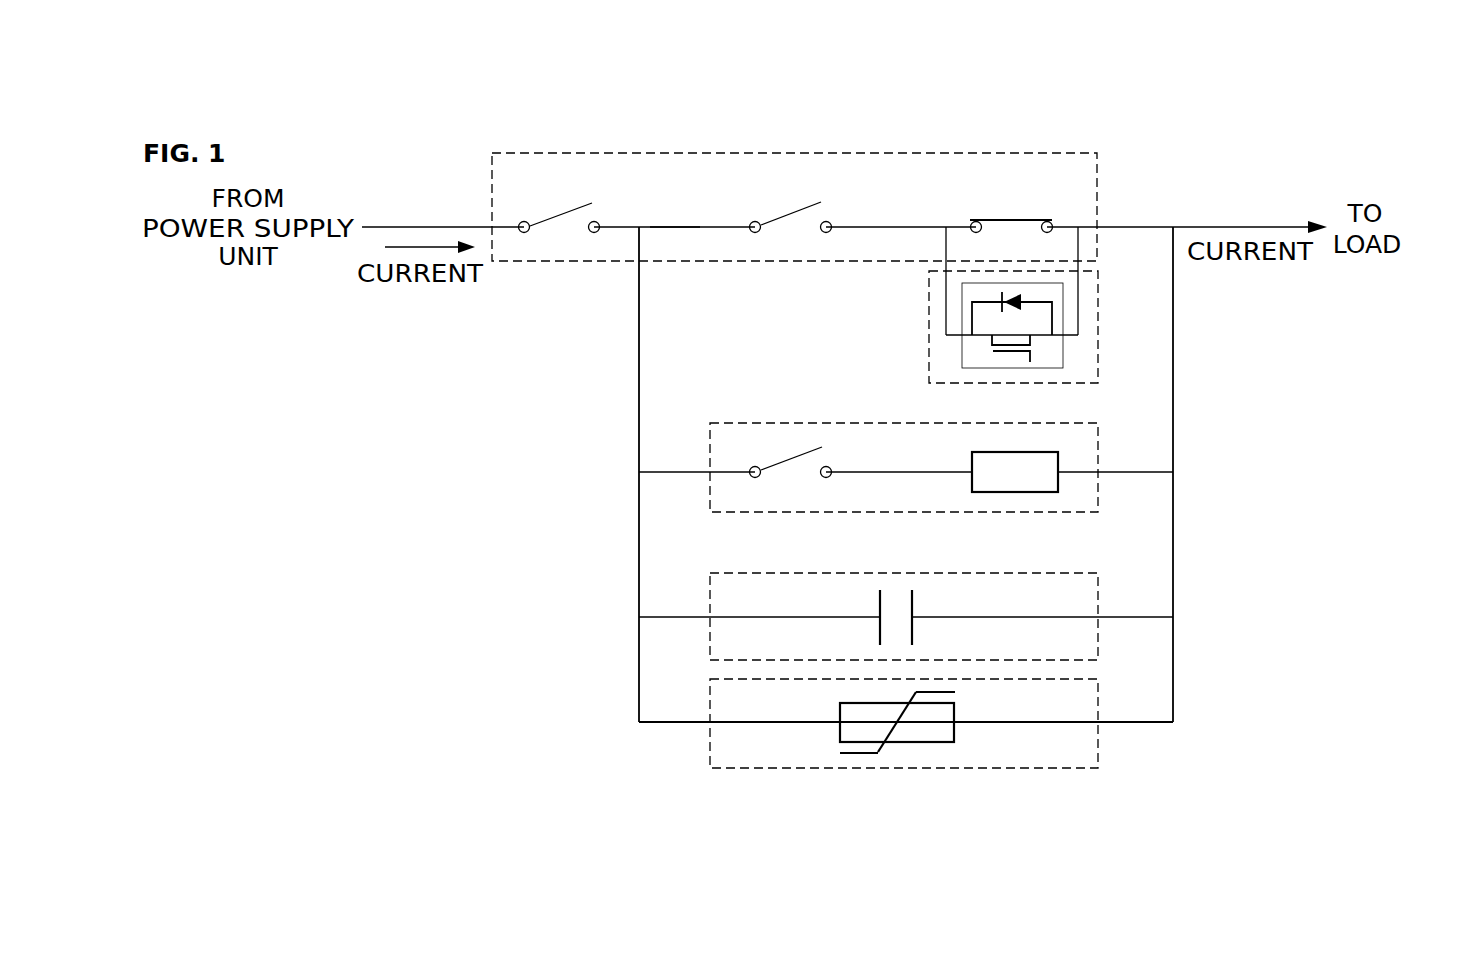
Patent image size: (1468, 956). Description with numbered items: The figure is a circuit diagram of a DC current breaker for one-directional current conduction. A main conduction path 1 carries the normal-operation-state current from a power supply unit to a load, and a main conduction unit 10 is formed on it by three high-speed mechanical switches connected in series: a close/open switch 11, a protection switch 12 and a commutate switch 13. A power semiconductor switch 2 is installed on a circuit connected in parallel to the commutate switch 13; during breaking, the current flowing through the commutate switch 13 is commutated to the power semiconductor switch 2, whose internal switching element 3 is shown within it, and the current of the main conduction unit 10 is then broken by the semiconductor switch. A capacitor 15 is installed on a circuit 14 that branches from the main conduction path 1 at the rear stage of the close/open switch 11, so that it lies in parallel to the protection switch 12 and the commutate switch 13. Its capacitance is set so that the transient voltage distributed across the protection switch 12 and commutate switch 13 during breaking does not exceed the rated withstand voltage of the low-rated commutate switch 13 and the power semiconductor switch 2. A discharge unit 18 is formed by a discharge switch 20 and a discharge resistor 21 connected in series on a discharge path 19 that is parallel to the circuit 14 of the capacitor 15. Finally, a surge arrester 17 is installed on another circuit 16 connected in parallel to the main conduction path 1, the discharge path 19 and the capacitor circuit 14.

The main conduction path 1 is at (676, 227).
The main conduction unit 10 is at (882, 153).
The close/open switch 11 is at (563, 200).
The protection switch 12 is at (797, 203).
The commutate switch 13 is at (1007, 219).
The power semiconductor switch 2 is at (1039, 305).
The semiconductor switch element 3 is at (946, 302).
The discharge unit 18 is at (1098, 440).
The discharge path 19 is at (678, 472).
The discharge switch 20 is at (795, 452).
The discharge resistor 21 is at (1058, 483).
The capacitor circuit 14 is at (1098, 645).
The capacitor 15 is at (880, 602).
The surge arrester circuit 16 is at (1040, 768).
The surge arrester 17 is at (840, 732).